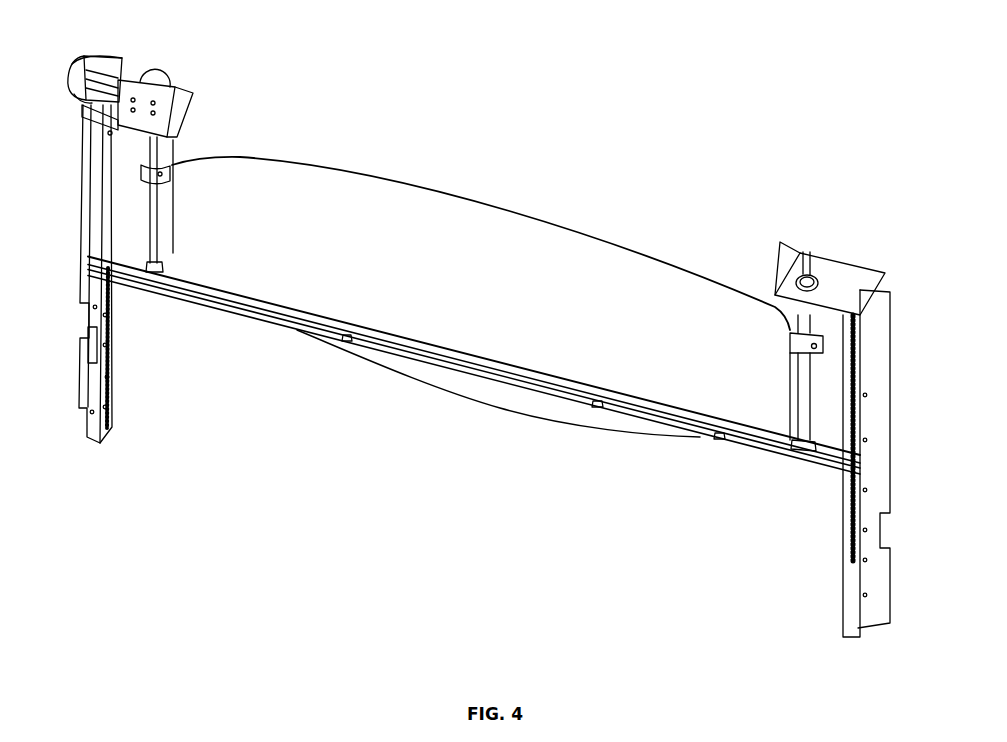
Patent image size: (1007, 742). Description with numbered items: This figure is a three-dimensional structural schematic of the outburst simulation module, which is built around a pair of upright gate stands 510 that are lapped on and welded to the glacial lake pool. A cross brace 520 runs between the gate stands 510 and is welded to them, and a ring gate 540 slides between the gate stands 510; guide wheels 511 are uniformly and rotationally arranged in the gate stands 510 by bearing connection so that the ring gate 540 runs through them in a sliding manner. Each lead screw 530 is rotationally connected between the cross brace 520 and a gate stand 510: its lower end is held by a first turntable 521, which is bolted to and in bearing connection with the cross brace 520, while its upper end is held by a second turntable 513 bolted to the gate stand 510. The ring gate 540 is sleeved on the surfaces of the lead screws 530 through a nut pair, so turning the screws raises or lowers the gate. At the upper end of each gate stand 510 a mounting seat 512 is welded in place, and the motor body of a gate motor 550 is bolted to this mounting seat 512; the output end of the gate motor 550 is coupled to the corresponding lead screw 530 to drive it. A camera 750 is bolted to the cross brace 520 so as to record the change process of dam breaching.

The gate motor 550 is at (97, 55).
The mounting seat 512 is at (160, 102).
The ring gate 540 is at (297, 190).
The lead screw 530 is at (150, 192).
The guide wheel 511 is at (110, 222).
The second turntable 513 is at (818, 283).
The gate stand 510 is at (875, 423).
The cross brace 520 is at (298, 330).
The camera 750 is at (471, 374).
The first turntable 521 is at (797, 452).